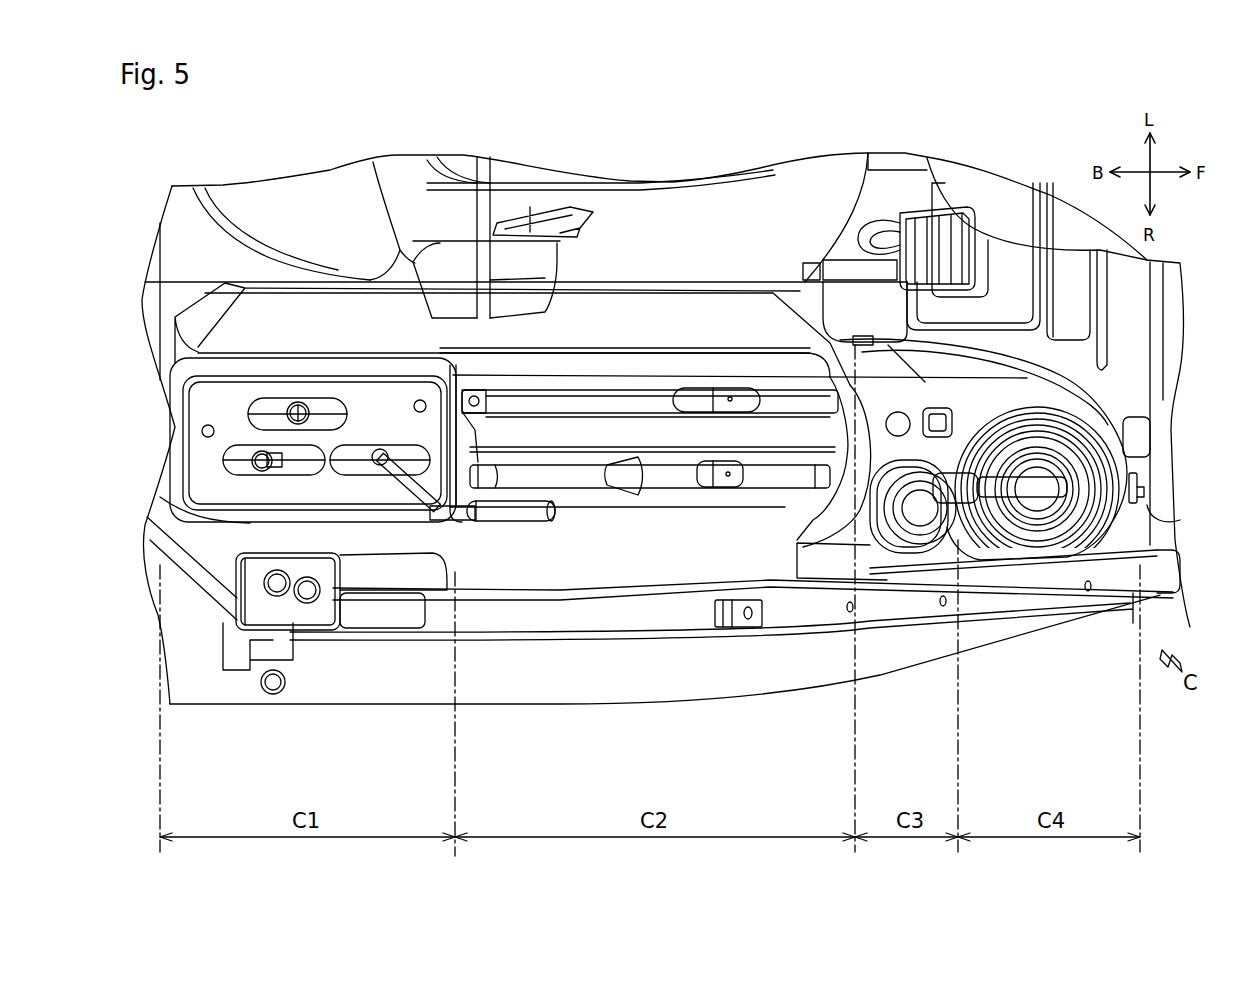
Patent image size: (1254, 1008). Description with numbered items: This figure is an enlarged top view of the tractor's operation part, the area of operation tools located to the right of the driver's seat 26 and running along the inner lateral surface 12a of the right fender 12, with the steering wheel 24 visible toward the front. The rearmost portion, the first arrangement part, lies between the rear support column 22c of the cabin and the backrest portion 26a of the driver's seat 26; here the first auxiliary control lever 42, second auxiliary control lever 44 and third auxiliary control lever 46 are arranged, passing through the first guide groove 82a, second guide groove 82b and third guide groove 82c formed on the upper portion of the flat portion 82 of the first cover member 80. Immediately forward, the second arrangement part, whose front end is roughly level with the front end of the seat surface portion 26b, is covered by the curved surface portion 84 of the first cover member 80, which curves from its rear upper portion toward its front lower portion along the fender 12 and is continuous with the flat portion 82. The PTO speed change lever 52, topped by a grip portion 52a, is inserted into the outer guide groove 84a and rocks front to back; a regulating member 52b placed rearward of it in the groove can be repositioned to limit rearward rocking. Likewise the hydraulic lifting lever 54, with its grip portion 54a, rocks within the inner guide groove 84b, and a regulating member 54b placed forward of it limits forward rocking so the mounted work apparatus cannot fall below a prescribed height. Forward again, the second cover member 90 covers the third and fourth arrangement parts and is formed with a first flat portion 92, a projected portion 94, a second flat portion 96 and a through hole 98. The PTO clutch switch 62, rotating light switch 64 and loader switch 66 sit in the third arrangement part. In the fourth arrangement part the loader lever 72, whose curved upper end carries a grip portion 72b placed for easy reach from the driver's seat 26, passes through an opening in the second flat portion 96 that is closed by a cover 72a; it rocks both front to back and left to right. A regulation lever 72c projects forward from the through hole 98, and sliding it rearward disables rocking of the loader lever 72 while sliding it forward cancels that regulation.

The fender 12 is at (415, 690).
The inner lateral surface 12a is at (615, 300).
The rear support column 22c is at (237, 615).
The steering wheel 24 is at (1005, 215).
The driver's seat 26 is at (228, 238).
The backrest portion 26a is at (290, 193).
The seat surface portion 26b is at (664, 190).
The first auxiliary control lever 42 is at (497, 517).
The second auxiliary control lever 44 is at (208, 555).
The third auxiliary control lever 46 is at (283, 404).
The PTO speed change lever 52 is at (733, 492).
The grip portion 52a is at (700, 487).
The regulating member 52b is at (670, 478).
The hydraulic lifting lever 54 is at (718, 394).
The grip portion 54a is at (745, 396).
The regulating member 54b is at (840, 360).
The PTO clutch switch 62 is at (917, 527).
The rotating light switch 64 is at (945, 408).
The loader switch 66 is at (905, 412).
The loader lever 72 is at (1005, 522).
The cover 72a is at (1098, 390).
The grip portion 72b is at (978, 525).
The regulation lever 72c is at (1147, 487).
The first cover member 80 is at (362, 348).
The flat portion 82 is at (390, 388).
The first guide groove 82a is at (367, 473).
The second guide groove 82b is at (305, 475).
The third guide groove 82c is at (317, 398).
The curved surface portion 84 is at (600, 425).
The outer guide groove 84a is at (700, 510).
The inner guide groove 84b is at (555, 397).
The second cover member 90 is at (1137, 432).
The first flat portion 92 is at (870, 400).
The projected portion 94 is at (850, 500).
The second flat portion 96 is at (1100, 527).
The through hole 98 is at (1150, 515).